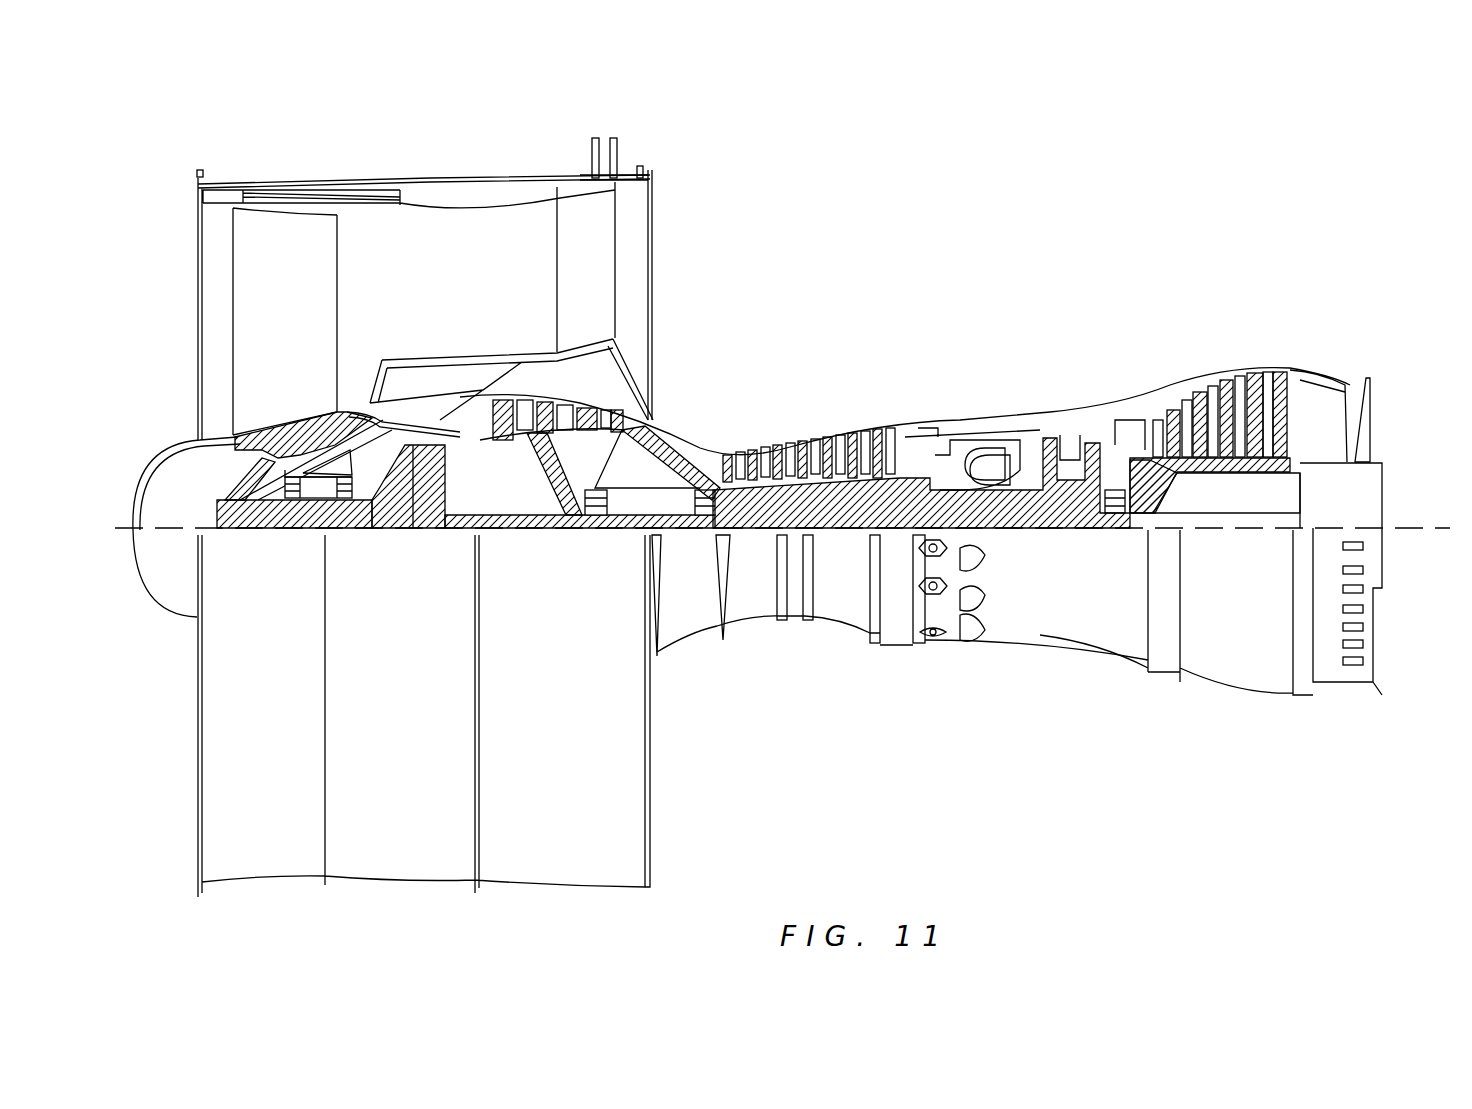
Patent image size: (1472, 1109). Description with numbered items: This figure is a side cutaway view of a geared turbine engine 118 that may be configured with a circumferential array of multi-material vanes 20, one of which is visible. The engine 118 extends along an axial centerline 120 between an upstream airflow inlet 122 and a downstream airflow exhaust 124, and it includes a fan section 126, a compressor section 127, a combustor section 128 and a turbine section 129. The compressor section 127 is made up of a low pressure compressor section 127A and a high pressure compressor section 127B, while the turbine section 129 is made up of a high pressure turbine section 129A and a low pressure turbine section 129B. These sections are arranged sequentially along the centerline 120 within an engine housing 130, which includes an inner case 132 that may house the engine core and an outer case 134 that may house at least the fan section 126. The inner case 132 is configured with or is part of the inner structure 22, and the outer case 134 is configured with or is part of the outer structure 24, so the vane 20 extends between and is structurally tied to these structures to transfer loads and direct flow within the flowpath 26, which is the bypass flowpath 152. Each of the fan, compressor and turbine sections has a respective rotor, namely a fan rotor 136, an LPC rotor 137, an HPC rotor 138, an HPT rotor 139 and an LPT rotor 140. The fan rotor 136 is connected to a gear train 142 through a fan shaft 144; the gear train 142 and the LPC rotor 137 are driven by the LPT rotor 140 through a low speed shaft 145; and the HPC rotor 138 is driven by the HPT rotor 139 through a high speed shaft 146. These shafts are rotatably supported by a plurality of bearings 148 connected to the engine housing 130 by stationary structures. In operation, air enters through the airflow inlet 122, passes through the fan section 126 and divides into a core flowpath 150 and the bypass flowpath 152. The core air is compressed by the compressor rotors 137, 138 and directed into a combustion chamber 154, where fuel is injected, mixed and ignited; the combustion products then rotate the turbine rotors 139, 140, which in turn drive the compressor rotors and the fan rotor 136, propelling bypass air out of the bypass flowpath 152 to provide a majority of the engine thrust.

The geared turbine engine 118 is at (158, 156).
The axial centerline 120 is at (1440, 545).
The upstream airflow inlet 122 is at (197, 262).
The downstream airflow exhaust 124 is at (1375, 410).
The fan section 126 is at (387, 152).
The compressor section 127 is at (897, 87).
The low pressure compressor section 127A is at (652, 137).
The high pressure compressor section 127B is at (895, 352).
The combustor section 128 is at (1035, 348).
The turbine section 129 is at (1327, 275).
The high pressure turbine section 129A is at (1125, 348).
The low pressure turbine section 129B is at (1327, 348).
The multi-material vane 20 is at (620, 258).
The inner structure 22 is at (637, 366).
The outer structure 24 is at (652, 170).
The flowpath 26 is at (497, 290).
The bypass flowpath 152 is at (491, 339).
The engine housing 130 is at (692, 670).
The inner case 132 is at (895, 645).
The outer case 134 is at (610, 888).
The fan rotor 136 is at (230, 445).
The LPC rotor 137 is at (547, 465).
The HPC rotor 138 is at (835, 490).
The HPT rotor 139 is at (1065, 500).
The LPT rotor 140 is at (1230, 470).
The gear train 142 is at (428, 528).
The fan shaft 144 is at (272, 530).
The low speed shaft 145 is at (1240, 530).
The high speed shaft 146 is at (993, 513).
The bearings 148 is at (340, 500).
The core flowpath 150 is at (675, 446).
The combustion chamber 154 is at (988, 460).